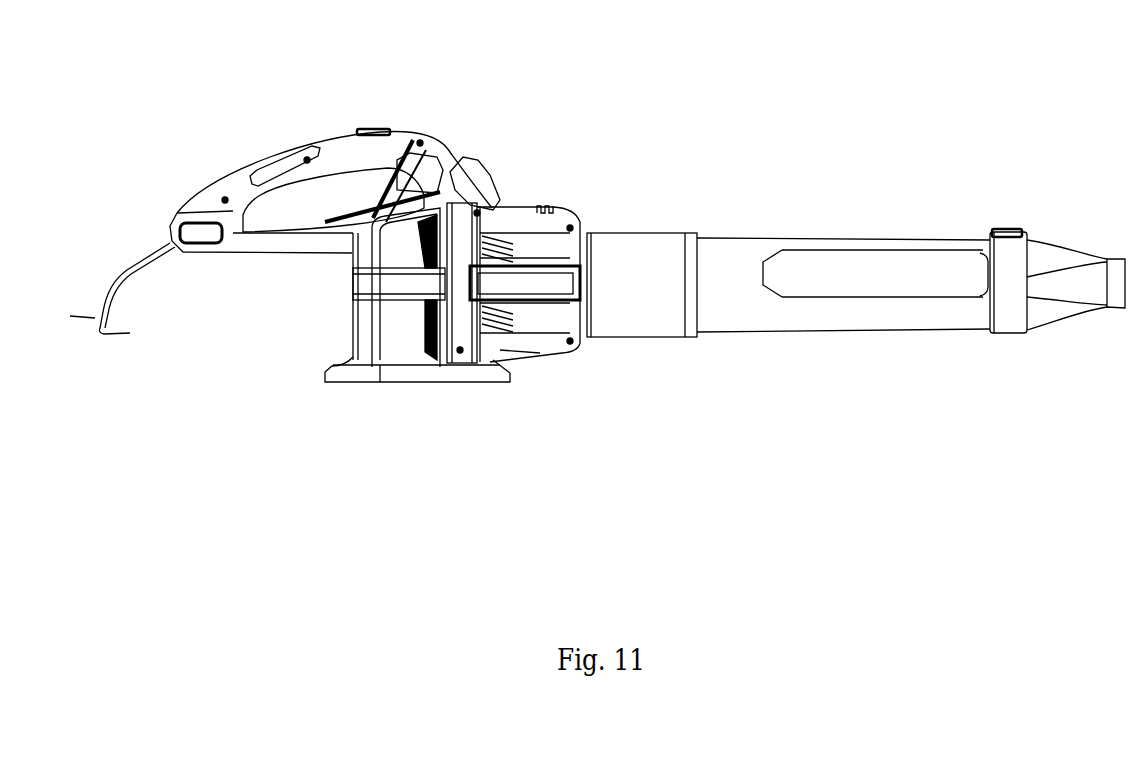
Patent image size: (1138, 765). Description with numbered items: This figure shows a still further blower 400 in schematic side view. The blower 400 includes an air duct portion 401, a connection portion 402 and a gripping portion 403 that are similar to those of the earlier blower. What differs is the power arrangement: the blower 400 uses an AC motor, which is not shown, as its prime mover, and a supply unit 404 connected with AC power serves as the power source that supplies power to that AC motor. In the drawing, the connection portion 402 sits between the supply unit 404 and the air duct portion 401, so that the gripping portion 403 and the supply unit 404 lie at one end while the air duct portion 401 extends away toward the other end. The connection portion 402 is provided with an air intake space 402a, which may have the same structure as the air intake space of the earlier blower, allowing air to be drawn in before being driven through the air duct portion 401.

The blower 400 is at (597, 229).
The air duct portion 401 is at (856, 255).
The connection portion 402 is at (466, 241).
The air intake space 402a is at (414, 348).
The gripping portion 403 is at (333, 168).
The supply unit 404 is at (150, 257).